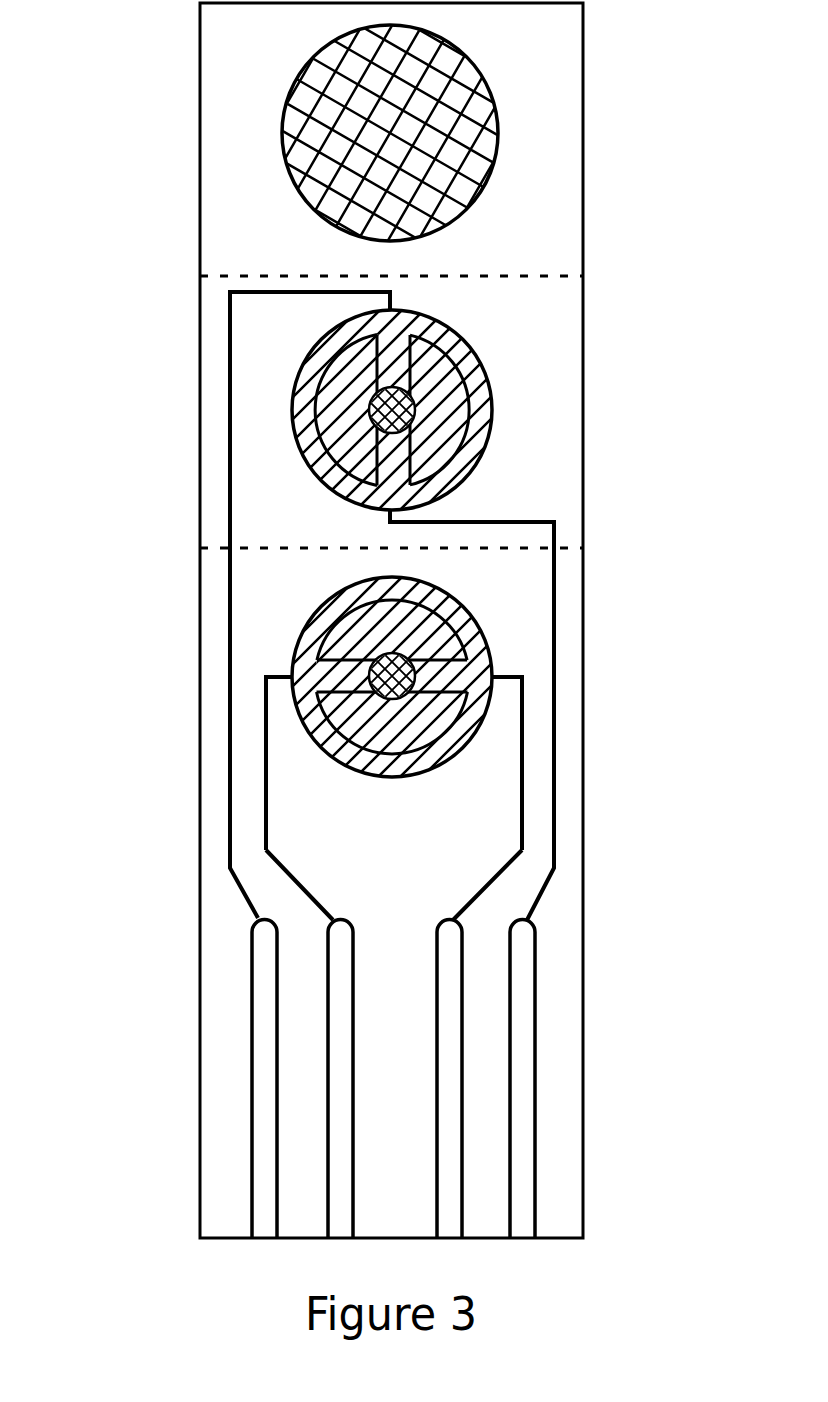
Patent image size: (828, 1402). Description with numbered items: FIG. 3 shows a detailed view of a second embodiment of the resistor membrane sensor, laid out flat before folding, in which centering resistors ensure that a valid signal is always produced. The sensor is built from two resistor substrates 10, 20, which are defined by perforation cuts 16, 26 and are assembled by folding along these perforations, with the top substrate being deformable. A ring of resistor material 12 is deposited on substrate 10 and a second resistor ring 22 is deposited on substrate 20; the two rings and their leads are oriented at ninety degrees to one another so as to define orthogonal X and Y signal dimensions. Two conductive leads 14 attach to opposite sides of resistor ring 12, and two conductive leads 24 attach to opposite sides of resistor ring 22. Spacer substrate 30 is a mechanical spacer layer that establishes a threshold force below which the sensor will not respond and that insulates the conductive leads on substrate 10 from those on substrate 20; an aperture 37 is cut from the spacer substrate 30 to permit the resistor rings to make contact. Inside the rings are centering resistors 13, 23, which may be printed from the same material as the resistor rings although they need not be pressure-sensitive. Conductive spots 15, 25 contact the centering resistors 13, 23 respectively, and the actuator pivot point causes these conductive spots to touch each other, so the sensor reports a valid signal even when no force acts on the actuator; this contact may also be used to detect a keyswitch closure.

The substrate 10 is at (583, 522).
The resistor ring 12 is at (488, 382).
The centering resistor 13 is at (377, 458).
The conductive leads 14 is at (278, 1168).
The conductive spot 15 is at (413, 413).
The perforation cut 16 is at (260, 277).
The substrate 20 is at (583, 753).
The resistor ring 22 is at (487, 648).
The centering resistor 23 is at (350, 692).
The conductive leads 24 is at (348, 1030).
The conductive spot 25 is at (397, 660).
The perforation cut 26 is at (263, 547).
The spacer substrate 30 is at (583, 210).
The aperture 37 is at (495, 100).